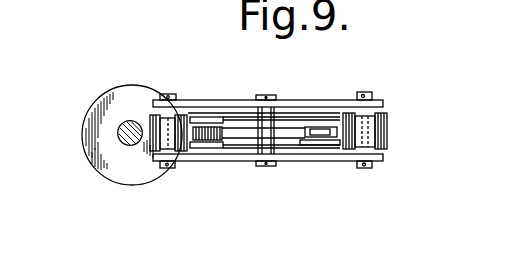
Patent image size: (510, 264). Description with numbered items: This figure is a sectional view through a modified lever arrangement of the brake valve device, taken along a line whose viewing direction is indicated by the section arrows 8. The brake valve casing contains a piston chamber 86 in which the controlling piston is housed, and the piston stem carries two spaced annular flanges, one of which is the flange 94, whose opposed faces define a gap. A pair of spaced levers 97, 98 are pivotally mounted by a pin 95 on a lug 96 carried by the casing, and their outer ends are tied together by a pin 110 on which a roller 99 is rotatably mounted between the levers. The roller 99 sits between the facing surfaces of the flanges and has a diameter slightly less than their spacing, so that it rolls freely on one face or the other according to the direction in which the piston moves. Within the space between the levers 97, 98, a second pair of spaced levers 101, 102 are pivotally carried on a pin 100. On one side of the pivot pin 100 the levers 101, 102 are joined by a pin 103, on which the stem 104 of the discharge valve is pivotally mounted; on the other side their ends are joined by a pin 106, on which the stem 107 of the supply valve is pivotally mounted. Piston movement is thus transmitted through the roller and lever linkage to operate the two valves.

The section line 8- 8 is at (154, 160).
The piston chamber 86 is at (122, 141).
The flange 94 is at (86, 112).
The pin 95 is at (373, 97).
The lug 96 is at (388, 129).
The lever 97 is at (306, 100).
The lever 98 is at (307, 162).
The roller 99 is at (157, 128).
The pivot pin 100 is at (263, 95).
The lever 101 is at (285, 117).
The lever 102 is at (291, 150).
The pin 103 is at (320, 127).
The discharge valve stem 104 is at (326, 152).
The pin 106 is at (215, 127).
The supply valve stem 107 is at (238, 149).
The pin 110 is at (173, 97).